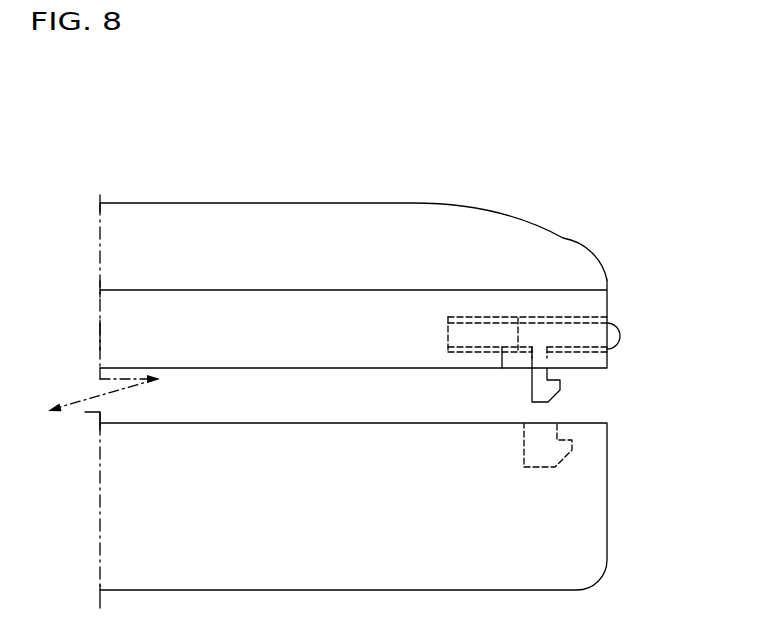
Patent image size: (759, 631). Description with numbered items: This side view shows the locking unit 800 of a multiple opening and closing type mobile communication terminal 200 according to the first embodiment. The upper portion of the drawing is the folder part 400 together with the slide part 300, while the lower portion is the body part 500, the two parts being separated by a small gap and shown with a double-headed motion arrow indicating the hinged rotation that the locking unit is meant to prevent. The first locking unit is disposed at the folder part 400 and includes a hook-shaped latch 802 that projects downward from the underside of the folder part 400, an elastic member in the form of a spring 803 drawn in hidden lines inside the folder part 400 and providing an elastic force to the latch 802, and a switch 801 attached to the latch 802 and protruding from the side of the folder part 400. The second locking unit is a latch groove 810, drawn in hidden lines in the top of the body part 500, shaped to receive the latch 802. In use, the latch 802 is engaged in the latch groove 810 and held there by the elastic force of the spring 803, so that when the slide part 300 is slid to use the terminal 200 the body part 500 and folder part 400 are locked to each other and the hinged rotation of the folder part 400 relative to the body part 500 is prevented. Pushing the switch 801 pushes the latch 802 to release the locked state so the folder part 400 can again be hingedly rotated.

The multiple opening and closing type mobile communication terminal 200 is at (380, 257).
The slide part 300 is at (558, 255).
The folder part 400 is at (595, 300).
The body part 500 is at (401, 510).
The hook 800 is at (574, 400).
The switch 801 is at (612, 337).
The hook-shaped latch 802 is at (556, 372).
The spring 803 is at (518, 318).
The latch groove 810 is at (582, 454).